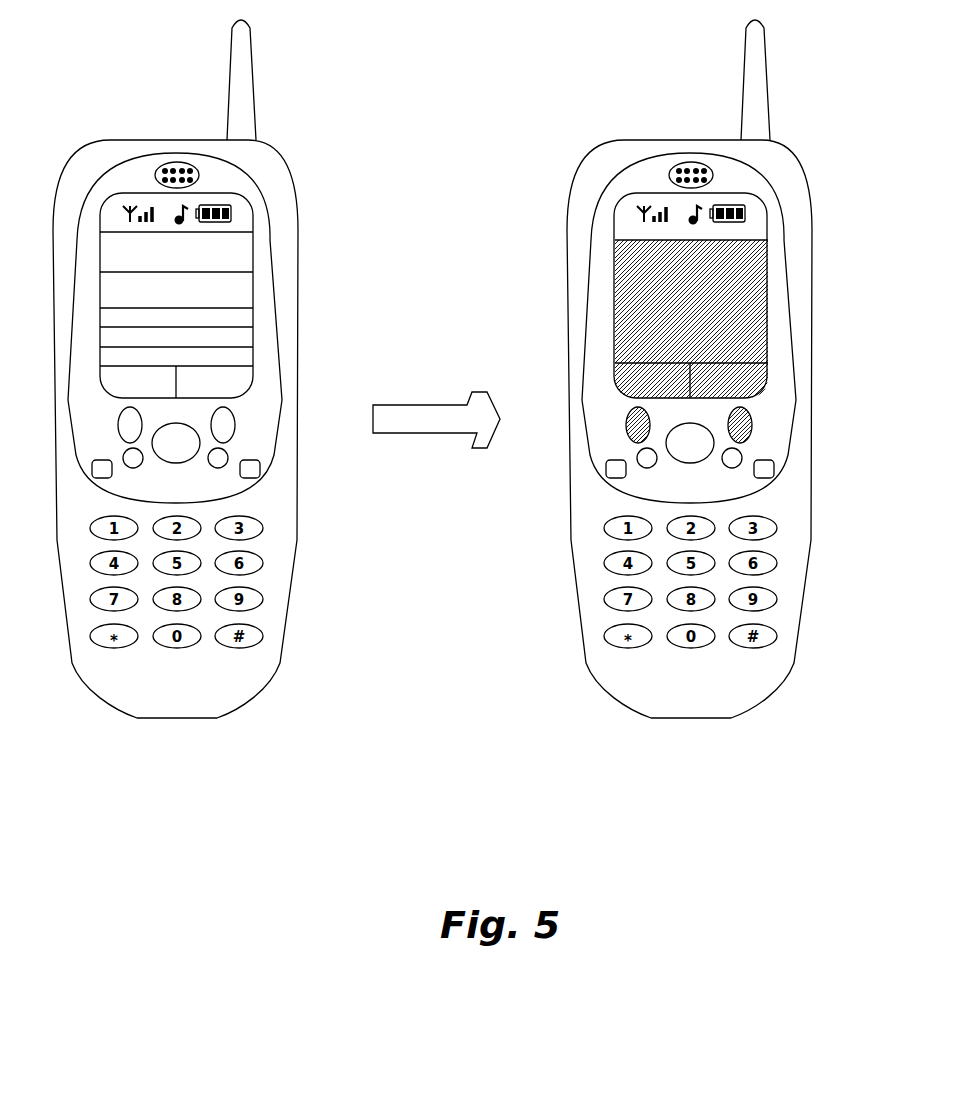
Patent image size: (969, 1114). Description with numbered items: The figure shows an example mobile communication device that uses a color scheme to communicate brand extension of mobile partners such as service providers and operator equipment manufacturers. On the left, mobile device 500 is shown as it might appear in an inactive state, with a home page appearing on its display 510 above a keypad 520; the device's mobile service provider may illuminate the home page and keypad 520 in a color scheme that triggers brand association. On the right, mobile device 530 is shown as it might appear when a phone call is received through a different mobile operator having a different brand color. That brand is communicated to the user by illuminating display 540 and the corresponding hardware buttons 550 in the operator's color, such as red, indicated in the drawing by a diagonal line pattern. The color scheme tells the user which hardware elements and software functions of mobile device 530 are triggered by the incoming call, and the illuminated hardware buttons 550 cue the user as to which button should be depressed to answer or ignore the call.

The mobile device 500 is at (298, 210).
The display 510 is at (258, 292).
The keypad 520 is at (315, 403).
The mobile device 530 is at (805, 178).
The display 540 is at (772, 272).
The hardware buttons 550 is at (625, 427).